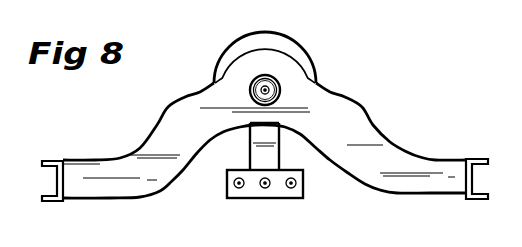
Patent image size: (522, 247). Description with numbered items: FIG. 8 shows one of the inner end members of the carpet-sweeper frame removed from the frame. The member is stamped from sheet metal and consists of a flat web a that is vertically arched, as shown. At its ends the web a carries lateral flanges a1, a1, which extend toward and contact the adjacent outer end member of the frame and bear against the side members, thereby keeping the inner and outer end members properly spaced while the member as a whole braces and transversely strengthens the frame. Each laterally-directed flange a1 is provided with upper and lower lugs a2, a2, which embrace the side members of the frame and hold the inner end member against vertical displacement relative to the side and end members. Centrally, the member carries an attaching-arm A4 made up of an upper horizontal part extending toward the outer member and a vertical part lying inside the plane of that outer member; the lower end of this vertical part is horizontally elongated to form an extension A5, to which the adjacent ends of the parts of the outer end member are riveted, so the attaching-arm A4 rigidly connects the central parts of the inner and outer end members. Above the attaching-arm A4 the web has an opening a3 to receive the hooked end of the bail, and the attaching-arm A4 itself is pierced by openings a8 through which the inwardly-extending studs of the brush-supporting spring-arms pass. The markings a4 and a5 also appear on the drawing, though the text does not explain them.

The flat web a is at (265, 140).
The lateral flange a1 is at (65, 178).
The lug a2 is at (50, 196).
The opening a3 is at (267, 88).
The arched rib a4 is at (243, 58).
The hub a5 is at (250, 95).
The attaching-arm A4 is at (270, 153).
The extension A5 is at (229, 197).
The opening a8 is at (271, 186).